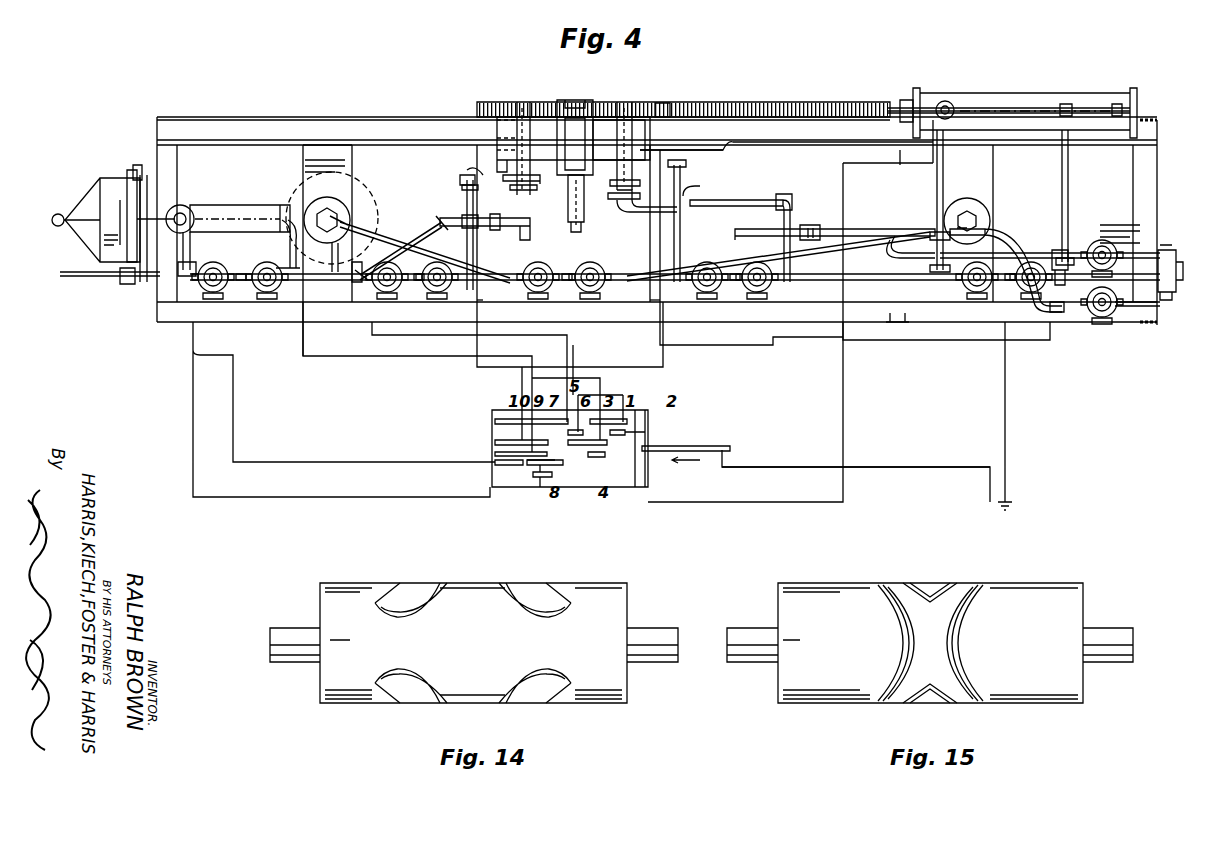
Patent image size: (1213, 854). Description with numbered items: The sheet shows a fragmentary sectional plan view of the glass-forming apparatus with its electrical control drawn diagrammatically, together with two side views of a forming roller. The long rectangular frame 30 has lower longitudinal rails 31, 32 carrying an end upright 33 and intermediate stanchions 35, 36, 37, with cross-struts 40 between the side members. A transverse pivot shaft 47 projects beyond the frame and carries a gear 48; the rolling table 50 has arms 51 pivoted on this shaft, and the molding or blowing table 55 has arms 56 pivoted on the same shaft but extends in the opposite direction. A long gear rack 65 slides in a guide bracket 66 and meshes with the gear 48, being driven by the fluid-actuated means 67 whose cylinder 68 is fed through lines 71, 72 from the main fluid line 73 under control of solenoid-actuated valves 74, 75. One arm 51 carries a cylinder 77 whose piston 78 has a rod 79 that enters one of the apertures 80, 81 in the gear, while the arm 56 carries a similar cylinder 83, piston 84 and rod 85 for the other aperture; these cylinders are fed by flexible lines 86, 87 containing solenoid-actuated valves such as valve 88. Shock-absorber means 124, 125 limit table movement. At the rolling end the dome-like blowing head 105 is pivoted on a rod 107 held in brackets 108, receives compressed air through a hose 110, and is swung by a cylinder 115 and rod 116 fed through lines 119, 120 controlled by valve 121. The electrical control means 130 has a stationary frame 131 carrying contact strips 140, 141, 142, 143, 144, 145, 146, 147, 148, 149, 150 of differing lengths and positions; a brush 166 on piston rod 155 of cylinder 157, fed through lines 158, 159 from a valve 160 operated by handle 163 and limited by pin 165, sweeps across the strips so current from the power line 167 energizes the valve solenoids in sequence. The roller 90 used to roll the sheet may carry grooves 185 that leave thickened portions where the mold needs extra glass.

In FIG. 4, the frame 30 is at (340, 120).
In FIG. 4, the lower longitudinal rail 31 is at (795, 143).
In FIG. 4, the lower longitudinal rail 32 is at (928, 333).
In FIG. 4, the upright post 33 is at (1158, 125).
In FIG. 4, the intermediate stanchion 35 is at (896, 325).
In FIG. 4, the intermediate stanchion 36 is at (648, 314).
In FIG. 4, the intermediate stanchion 37 is at (484, 314).
In FIG. 4, the cross-strut 40 is at (305, 166).
In FIG. 4, the transverse pivot shaft 47 is at (575, 100).
In FIG. 4, the gear 48 is at (592, 118).
In FIG. 4, the rolling table 50 is at (728, 145).
In FIG. 4, the arm 51 is at (605, 145).
In FIG. 4, the molding or blowing table 55 is at (462, 176).
In FIG. 4, the arm 56 is at (560, 200).
In FIG. 4, the gear rack 65 is at (838, 103).
In FIG. 4, the guide bracket 66 is at (545, 102).
In FIG. 4, the fluid-actuated means 67 is at (980, 102).
In FIG. 4, the cylinder 68 is at (1038, 100).
In FIG. 4, the fluid line 71 is at (1061, 184).
In FIG. 4, the fluid line 72 is at (936, 184).
In FIG. 4, the main fluid line 73 is at (888, 280).
In FIG. 4, the solenoid-actuated valve 74 is at (1058, 252).
In FIG. 4, the solenoid-actuated valve 75 is at (940, 101).
In FIG. 4, the cylinder 77 is at (660, 103).
In FIG. 4, the piston 78 is at (618, 190).
In FIG. 4, the rod 79 is at (668, 162).
In FIG. 4, the aperture 80 is at (522, 102).
In FIG. 4, the aperture 81 is at (630, 102).
In FIG. 4, the cylinder 83 is at (505, 128).
In FIG. 4, the piston 84 is at (520, 175).
In FIG. 4, the rod 85 is at (498, 150).
In FIG. 4, the fluid line 86 is at (432, 218).
In FIG. 4, the fluid line 87 is at (757, 204).
In FIG. 4, the solenoid-actuated valve 88 is at (360, 284).
In FIG. 14, the roller 90 is at (353, 583).
In FIG. 15, the roller 90 is at (1014, 586).
In FIG. 4, the blowing head 105 is at (98, 196).
In FIG. 4, the rod 107 is at (134, 170).
In FIG. 4, the bracket 108 is at (146, 165).
In FIG. 4, the hose 110 is at (62, 215).
In FIG. 4, the cylinder 115 is at (224, 205).
In FIG. 4, the rod 116 is at (182, 206).
In FIG. 4, the fluid line 119 is at (288, 250).
In FIG. 4, the fluid line 120 is at (196, 250).
In FIG. 4, the solenoid-actuated valve 121 is at (290, 290).
In FIG. 4, the shock-absorber means 124 is at (325, 240).
In FIG. 4, the shock-absorber means 125 is at (967, 208).
In FIG. 4, the electrical control means 130 is at (492, 418).
In FIG. 4, the stationary rectangular frame 131 is at (492, 487).
In FIG. 4, the contact strip 140 is at (642, 419).
In FIG. 4, the contact strip 141 is at (506, 416).
In FIG. 4, the contact strip 142 is at (648, 438).
In FIG. 4, the contact strip 143 is at (575, 447).
In FIG. 4, the contact strip 144 is at (597, 458).
In FIG. 4, the contact strip 145 is at (494, 441).
In FIG. 4, the contact strip 146 is at (600, 456).
In FIG. 4, the contact strip 147 is at (494, 456).
In FIG. 4, the contact strip 148 is at (530, 468).
In FIG. 4, the contact strip 149 is at (508, 467).
In FIG. 4, the contact strip 150 is at (543, 480).
In FIG. 4, the piston rod 155 is at (748, 228).
In FIG. 4, the cylinder 157 is at (830, 228).
In FIG. 4, the fluid line 158 is at (1012, 232).
In FIG. 4, the fluid line 159 is at (893, 247).
In FIG. 4, the valve 160 is at (1178, 258).
In FIG. 4, the handle 163 is at (1068, 312).
In FIG. 4, the pin 165 is at (716, 445).
In FIG. 4, the brush 166 is at (649, 478).
In FIG. 4, the power line 167 is at (788, 466).
In FIG. 14, the groove 185 is at (543, 590).
In FIG. 15, the groove 185 is at (950, 590).